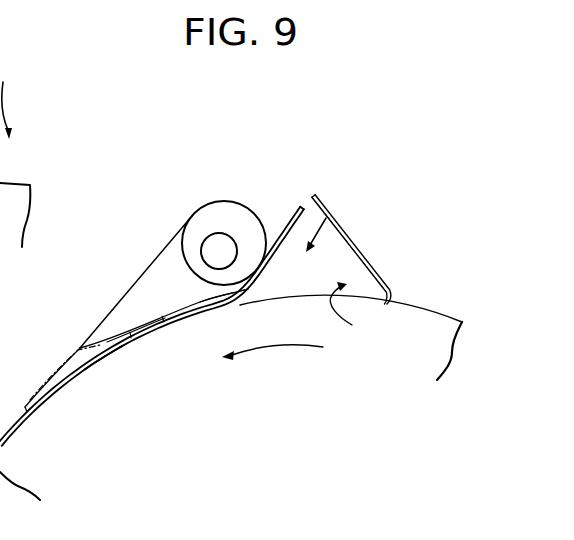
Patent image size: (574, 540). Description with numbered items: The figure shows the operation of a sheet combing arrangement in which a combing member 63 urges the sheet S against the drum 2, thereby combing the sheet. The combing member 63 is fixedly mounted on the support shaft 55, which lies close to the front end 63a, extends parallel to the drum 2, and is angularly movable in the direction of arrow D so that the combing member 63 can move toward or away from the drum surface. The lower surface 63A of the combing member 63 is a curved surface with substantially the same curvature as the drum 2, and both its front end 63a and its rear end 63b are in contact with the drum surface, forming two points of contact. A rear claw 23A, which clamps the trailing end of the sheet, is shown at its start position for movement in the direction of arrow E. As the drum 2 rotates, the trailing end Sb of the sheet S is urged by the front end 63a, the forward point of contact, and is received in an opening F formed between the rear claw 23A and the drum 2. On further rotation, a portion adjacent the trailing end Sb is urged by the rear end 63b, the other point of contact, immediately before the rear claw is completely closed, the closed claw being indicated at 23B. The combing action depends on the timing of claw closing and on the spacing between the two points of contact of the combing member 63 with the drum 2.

The drum 2 is at (413, 312).
The rear claw 23A is at (372, 221).
The rear claw 23B is at (54, 374).
The support shaft 55 is at (201, 250).
The combing member 63 is at (197, 215).
The front end 63a is at (226, 303).
The lower surface 63A is at (166, 322).
The rear end 63b is at (101, 362).
The sheet S is at (281, 242).
The trailing end of the sheet Sb is at (297, 212).
The arrow D is at (3, 82).
The arrow E is at (326, 218).
The opening F is at (349, 315).